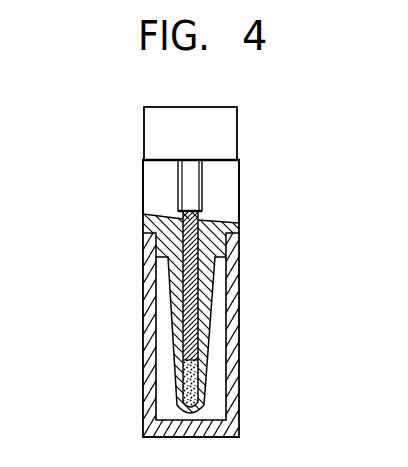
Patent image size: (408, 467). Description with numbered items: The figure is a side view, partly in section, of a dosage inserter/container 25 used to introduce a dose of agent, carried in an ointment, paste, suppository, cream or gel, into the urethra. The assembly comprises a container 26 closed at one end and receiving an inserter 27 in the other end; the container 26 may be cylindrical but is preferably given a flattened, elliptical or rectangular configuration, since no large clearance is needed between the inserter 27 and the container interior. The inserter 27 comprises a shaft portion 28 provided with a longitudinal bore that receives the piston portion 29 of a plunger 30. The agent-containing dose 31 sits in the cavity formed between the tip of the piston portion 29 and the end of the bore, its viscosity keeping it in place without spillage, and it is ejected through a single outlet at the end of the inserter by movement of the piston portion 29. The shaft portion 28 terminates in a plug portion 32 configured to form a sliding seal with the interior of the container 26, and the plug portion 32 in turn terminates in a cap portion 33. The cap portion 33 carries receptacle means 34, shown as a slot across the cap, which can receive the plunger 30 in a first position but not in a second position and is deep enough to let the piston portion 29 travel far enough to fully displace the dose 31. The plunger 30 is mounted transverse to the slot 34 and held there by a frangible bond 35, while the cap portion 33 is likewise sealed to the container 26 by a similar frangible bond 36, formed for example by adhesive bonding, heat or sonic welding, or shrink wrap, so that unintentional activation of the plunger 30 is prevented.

The dosage inserter/container 25 is at (285, 290).
The container 26 is at (240, 364).
The inserter 27 is at (223, 205).
The shaft portion 28 is at (183, 348).
The piston portion 29 is at (203, 194).
The plunger 30 is at (238, 125).
The agent-containing dose 31 is at (202, 397).
The plug portion 32 is at (152, 240).
The cap portion 33 is at (155, 193).
The receptacle means 34 is at (177, 187).
The frangible bond 35 is at (239, 158).
The frangible bond 36 is at (173, 247).